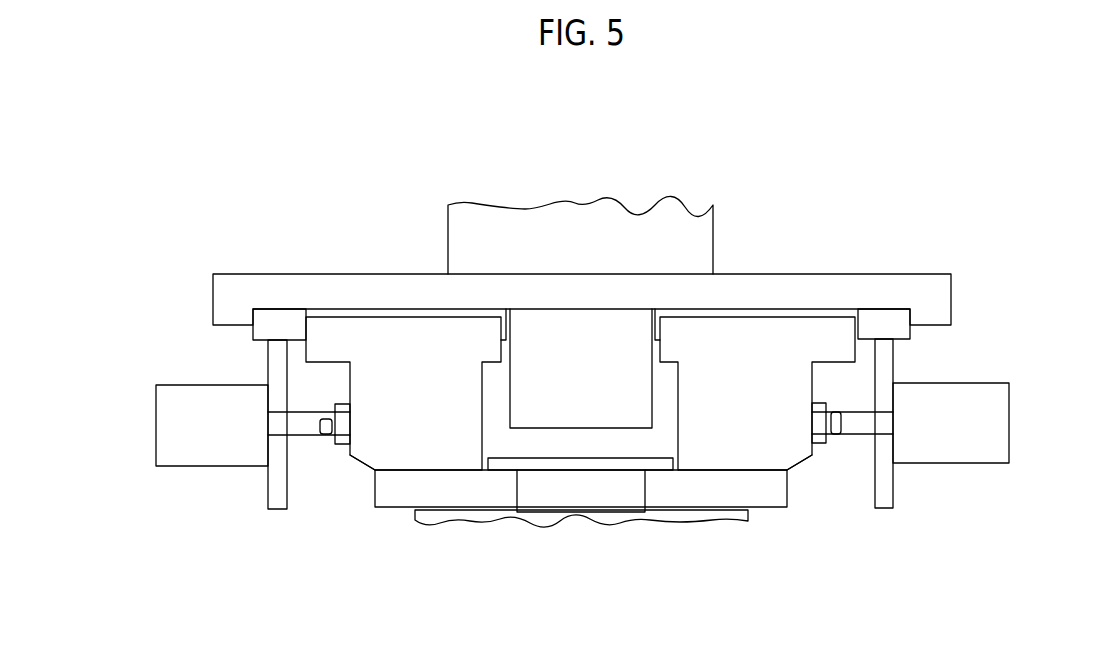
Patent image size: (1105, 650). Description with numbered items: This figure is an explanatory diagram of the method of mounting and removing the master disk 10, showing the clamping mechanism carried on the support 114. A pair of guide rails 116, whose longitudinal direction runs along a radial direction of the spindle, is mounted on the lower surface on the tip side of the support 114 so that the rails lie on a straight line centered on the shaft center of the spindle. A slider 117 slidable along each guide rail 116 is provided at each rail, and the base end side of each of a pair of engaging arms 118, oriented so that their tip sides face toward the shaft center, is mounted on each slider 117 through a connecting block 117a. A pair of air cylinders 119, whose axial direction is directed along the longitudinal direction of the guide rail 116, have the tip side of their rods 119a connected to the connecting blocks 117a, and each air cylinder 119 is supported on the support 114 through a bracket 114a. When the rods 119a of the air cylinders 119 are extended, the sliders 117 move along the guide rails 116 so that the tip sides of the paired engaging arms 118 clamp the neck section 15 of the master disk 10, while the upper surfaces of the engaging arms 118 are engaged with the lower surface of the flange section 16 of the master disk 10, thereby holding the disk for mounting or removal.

The master disk 10 is at (415, 514).
The neck section 15 is at (555, 497).
The flange section 16 is at (597, 465).
The support 114 is at (940, 273).
The bracket 114a is at (268, 488).
The guide rail 116 is at (252, 333).
The slider 117 is at (306, 330).
The connecting block 117a is at (360, 460).
The engaging arm 118 is at (375, 507).
The air cylinder 119 is at (155, 422).
The rod 119a is at (310, 438).